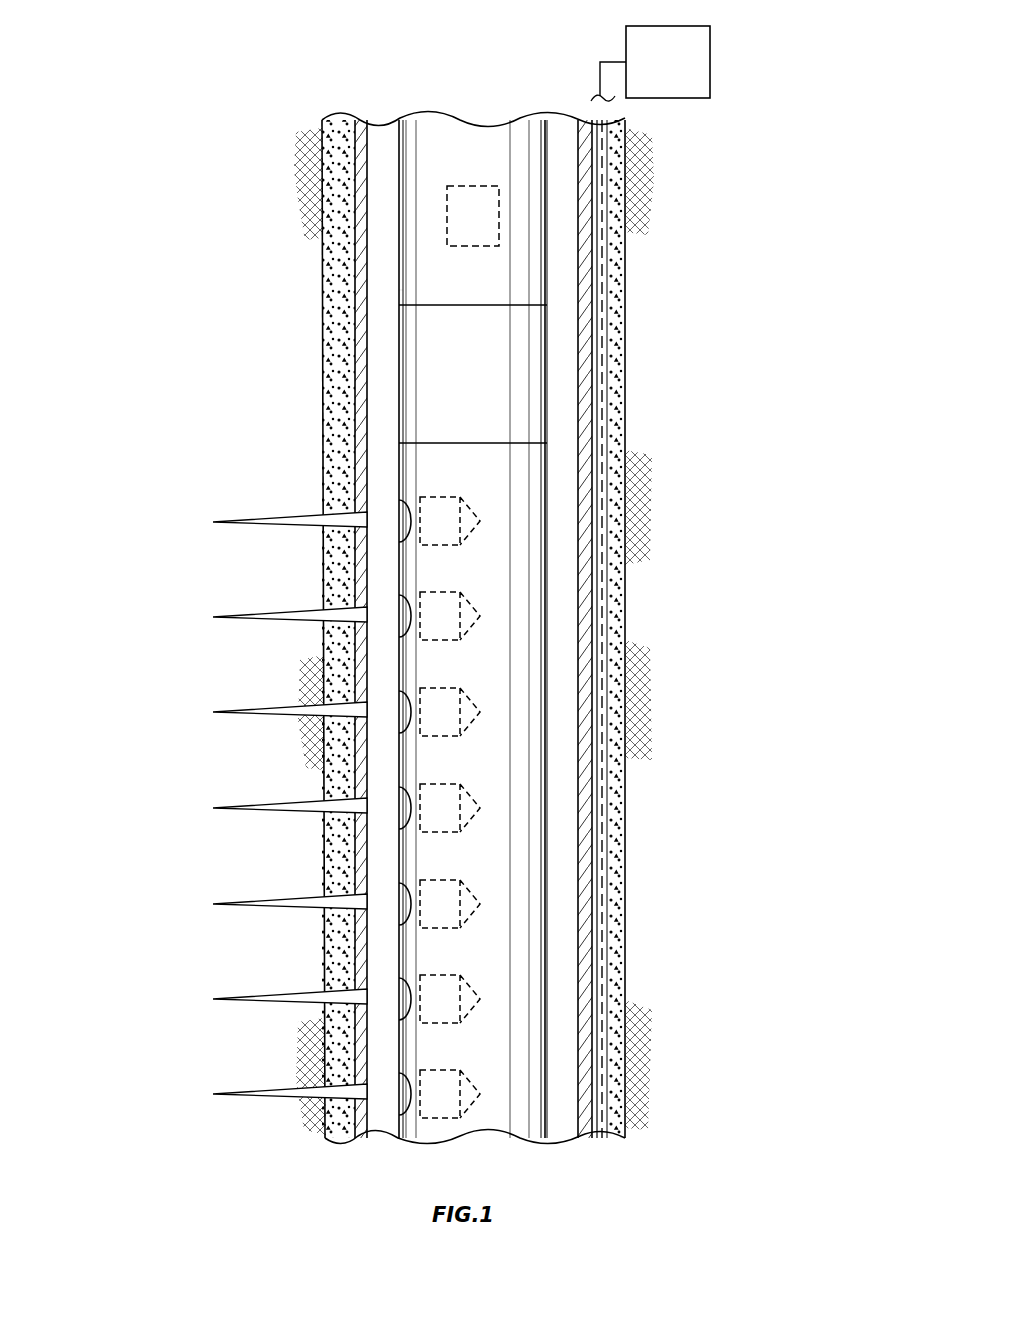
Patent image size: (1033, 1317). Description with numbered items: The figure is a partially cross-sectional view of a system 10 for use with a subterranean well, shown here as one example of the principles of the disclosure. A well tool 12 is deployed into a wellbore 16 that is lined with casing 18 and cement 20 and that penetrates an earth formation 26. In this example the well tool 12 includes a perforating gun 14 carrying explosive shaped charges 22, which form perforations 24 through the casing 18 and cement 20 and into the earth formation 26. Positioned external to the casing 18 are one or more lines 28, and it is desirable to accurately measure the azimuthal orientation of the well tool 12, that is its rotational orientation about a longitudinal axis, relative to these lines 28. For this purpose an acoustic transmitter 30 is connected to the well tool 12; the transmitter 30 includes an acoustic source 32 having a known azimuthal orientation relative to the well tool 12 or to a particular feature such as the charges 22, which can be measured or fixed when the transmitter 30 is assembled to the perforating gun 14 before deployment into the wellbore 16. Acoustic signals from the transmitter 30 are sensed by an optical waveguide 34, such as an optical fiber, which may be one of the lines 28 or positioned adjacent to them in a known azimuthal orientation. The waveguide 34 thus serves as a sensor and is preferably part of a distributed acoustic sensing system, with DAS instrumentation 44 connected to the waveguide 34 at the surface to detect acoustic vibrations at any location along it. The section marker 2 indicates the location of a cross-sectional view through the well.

The section line 2- 2 is at (283, 220).
The system 10 is at (791, 172).
The well tool 12 is at (566, 483).
The perforating gun 14 is at (548, 897).
The wellbore 16 is at (372, 1110).
The casing 18 is at (355, 344).
The cement 20 is at (625, 996).
The explosive shaped charges 22 is at (445, 497).
The perforations 24 is at (250, 612).
The earth formation 26 is at (121, 892).
The lines 28 is at (603, 682).
The acoustic transmitter 30 is at (396, 286).
The acoustic source 32 is at (478, 247).
The optical waveguide 34 is at (605, 368).
The DAS instrumentation 44 is at (712, 48).